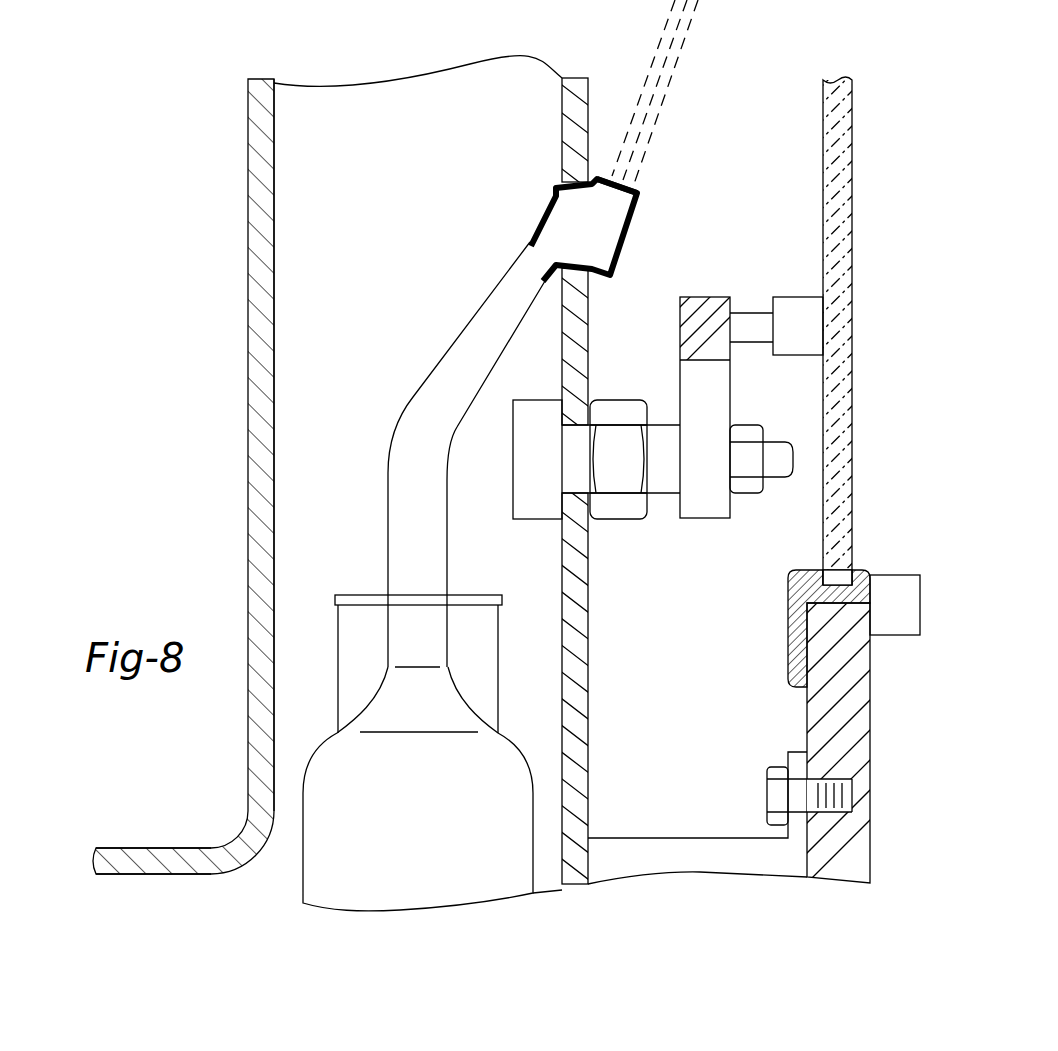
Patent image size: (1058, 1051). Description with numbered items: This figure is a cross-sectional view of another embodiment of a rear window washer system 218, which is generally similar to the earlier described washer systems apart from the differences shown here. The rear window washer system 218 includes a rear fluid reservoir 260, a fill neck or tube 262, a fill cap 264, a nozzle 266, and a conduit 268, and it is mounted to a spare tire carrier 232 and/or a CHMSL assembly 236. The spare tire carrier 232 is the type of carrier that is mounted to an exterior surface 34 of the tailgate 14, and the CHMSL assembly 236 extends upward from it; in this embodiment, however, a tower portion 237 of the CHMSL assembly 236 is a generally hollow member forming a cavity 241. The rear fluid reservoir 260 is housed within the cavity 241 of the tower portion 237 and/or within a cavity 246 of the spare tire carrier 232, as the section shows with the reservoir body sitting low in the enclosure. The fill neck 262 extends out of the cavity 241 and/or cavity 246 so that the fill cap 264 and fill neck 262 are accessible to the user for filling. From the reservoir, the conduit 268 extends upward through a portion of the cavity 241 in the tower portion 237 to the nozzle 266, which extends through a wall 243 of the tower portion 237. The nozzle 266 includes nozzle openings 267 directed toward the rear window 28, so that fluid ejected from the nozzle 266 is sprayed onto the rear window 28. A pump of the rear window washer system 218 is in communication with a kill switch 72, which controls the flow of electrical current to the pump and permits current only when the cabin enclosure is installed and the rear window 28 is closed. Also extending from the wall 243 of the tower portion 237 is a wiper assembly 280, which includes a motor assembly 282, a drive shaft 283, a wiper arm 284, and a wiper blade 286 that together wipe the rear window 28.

The tailgate 14 is at (878, 705).
The rear window 28 is at (849, 130).
The exterior surface 34 is at (807, 722).
The kill switch 72 is at (902, 575).
The rear window washer system 218 is at (409, 172).
The spare tire carrier 232 is at (158, 840).
The CHMSL assembly 236 is at (240, 176).
The tower portion 237 is at (247, 330).
The cavity 241 is at (275, 286).
The wall 243 is at (588, 92).
The cavity 246 is at (142, 874).
The rear fluid reservoir 260 is at (307, 876).
The fill neck 262 is at (350, 634).
The fill cap 264 is at (367, 597).
The nozzle 266 is at (628, 242).
The nozzle openings 267 is at (622, 184).
The conduit 268 is at (452, 362).
The wiper assembly 280 is at (680, 530).
The motor assembly 282 is at (538, 512).
The drive shaft 283 is at (662, 428).
The wiper arm 284 is at (724, 391).
The wiper blade 286 is at (795, 297).